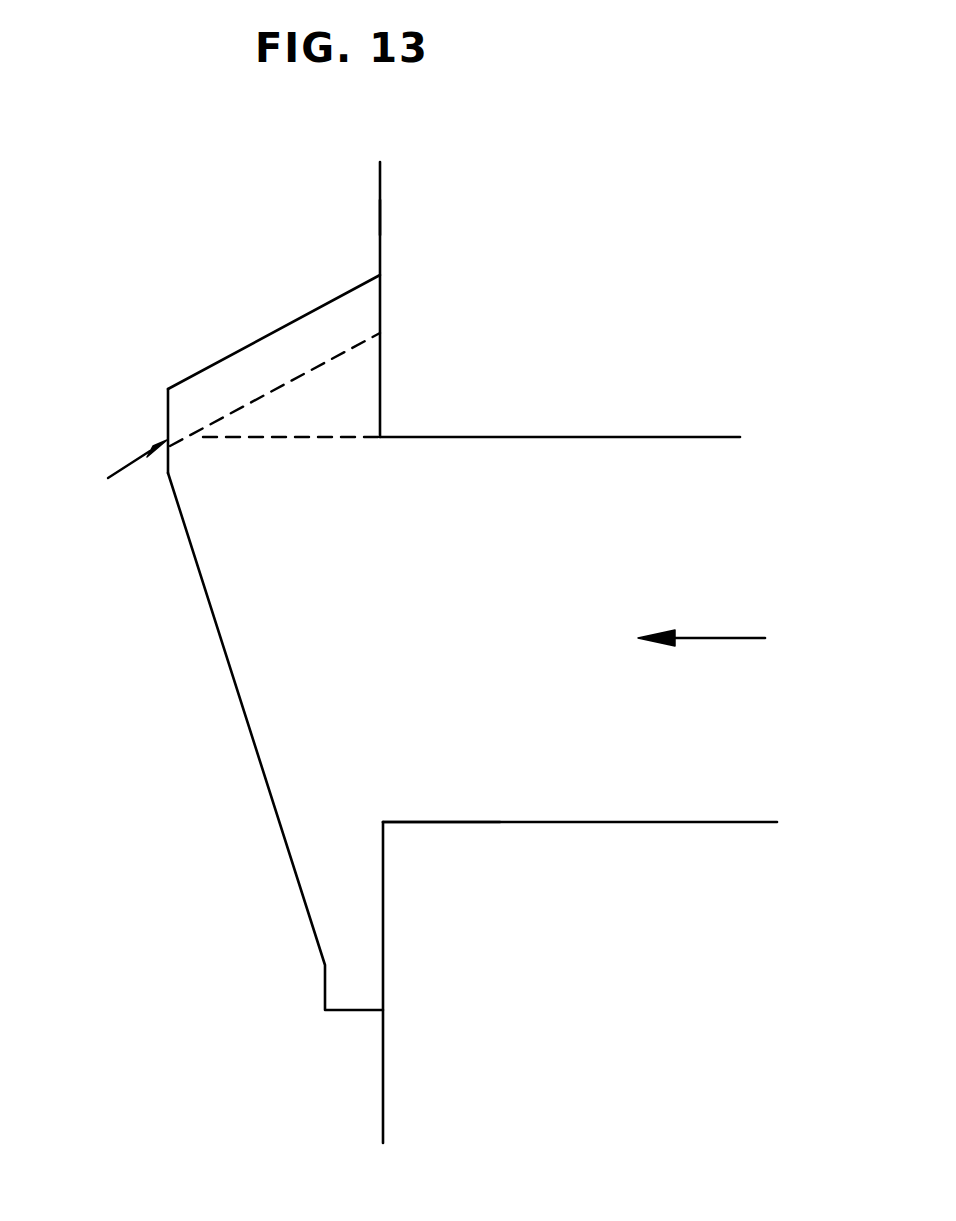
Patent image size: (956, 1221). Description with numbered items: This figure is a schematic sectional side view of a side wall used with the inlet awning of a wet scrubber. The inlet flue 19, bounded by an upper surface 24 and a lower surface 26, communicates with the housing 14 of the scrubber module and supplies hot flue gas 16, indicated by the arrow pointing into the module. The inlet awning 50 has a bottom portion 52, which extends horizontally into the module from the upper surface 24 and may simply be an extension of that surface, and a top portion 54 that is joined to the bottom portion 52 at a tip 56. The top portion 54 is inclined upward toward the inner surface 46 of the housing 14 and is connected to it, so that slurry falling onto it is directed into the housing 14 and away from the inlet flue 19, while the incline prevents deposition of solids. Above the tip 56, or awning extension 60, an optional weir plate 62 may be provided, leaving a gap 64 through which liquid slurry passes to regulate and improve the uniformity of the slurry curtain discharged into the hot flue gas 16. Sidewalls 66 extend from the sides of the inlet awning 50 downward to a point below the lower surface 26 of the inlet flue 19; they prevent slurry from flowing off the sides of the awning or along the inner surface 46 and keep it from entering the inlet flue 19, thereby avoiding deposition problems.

The housing 14 is at (380, 190).
The inner surface 46 is at (380, 218).
The weir plate 62 is at (168, 420).
The top portion 54 is at (292, 384).
The bottom portion 52 is at (322, 440).
The inlet awning 50 is at (357, 388).
The upper surface 24 is at (548, 437).
The tip 56 is at (205, 440).
The awning extension 60 is at (172, 455).
The gap 64 is at (119, 469).
The sidewalls 66 is at (278, 713).
The hot flue gas 16 is at (706, 645).
The inlet flue 19 is at (700, 800).
The lower surface 26 is at (490, 822).